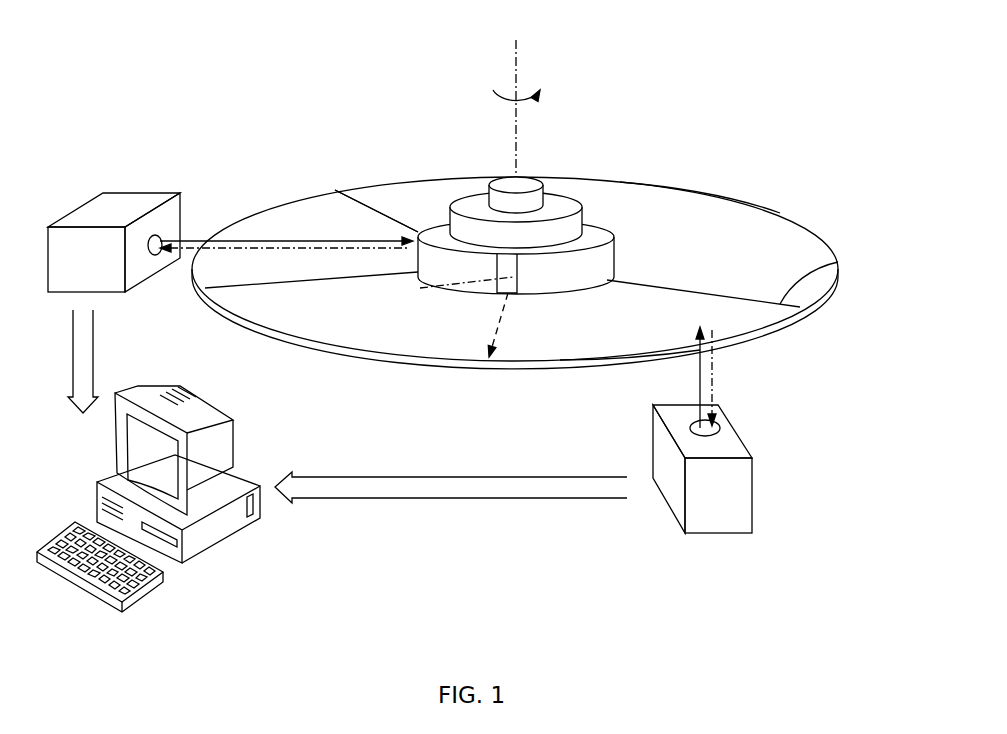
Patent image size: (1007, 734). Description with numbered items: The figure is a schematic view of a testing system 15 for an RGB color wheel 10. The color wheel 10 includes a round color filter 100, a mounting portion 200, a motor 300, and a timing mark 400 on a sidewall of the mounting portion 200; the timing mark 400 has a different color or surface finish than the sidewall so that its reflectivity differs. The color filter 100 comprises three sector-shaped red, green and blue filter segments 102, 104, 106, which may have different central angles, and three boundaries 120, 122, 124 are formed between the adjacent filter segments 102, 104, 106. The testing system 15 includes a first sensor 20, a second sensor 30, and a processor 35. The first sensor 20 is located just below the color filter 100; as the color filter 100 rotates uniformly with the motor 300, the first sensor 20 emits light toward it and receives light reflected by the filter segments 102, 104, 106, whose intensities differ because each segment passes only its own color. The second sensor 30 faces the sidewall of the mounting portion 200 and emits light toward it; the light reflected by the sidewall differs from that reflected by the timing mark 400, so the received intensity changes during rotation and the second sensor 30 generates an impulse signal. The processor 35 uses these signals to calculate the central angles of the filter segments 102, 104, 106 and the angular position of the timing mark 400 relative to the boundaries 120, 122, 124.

The testing system 15 is at (336, 71).
The RGB color wheel 10 is at (439, 164).
The round color filter 100 is at (827, 237).
The red filter segment 102 is at (630, 325).
The green filter segment 104 is at (727, 227).
The blue filter segment 106 is at (302, 236).
The boundary 120 is at (252, 288).
The boundary 122 is at (370, 205).
The boundary 124 is at (840, 260).
The mounting portion 200 is at (588, 235).
The motor 300 is at (522, 185).
The timing mark 400 is at (455, 284).
The second sensor 30 is at (123, 207).
The processor 35 is at (237, 452).
The first sensor 20 is at (745, 507).